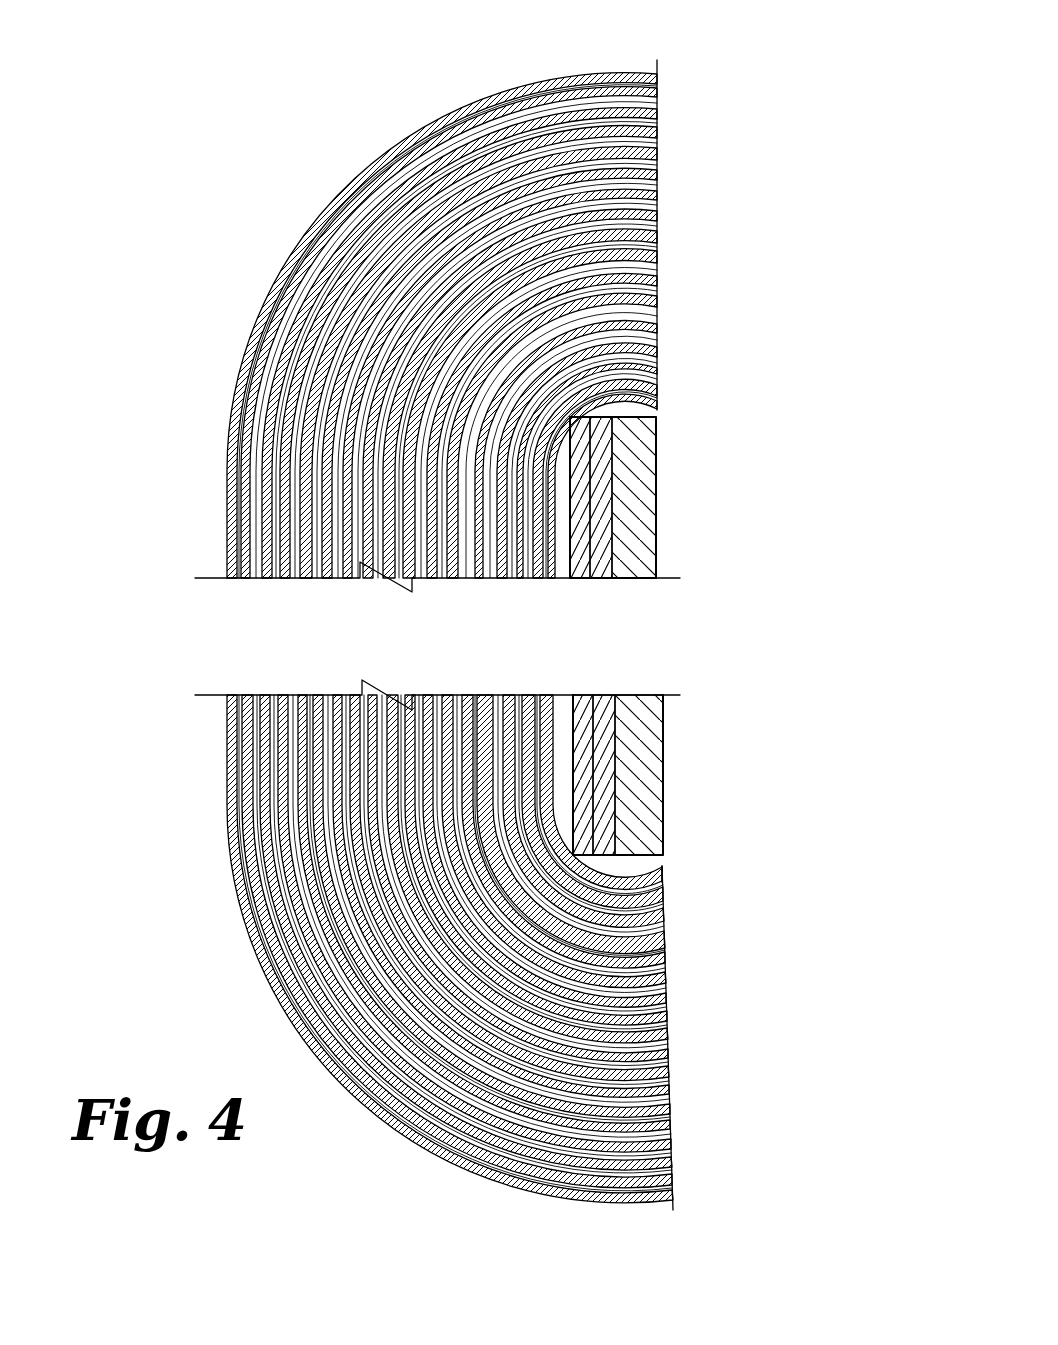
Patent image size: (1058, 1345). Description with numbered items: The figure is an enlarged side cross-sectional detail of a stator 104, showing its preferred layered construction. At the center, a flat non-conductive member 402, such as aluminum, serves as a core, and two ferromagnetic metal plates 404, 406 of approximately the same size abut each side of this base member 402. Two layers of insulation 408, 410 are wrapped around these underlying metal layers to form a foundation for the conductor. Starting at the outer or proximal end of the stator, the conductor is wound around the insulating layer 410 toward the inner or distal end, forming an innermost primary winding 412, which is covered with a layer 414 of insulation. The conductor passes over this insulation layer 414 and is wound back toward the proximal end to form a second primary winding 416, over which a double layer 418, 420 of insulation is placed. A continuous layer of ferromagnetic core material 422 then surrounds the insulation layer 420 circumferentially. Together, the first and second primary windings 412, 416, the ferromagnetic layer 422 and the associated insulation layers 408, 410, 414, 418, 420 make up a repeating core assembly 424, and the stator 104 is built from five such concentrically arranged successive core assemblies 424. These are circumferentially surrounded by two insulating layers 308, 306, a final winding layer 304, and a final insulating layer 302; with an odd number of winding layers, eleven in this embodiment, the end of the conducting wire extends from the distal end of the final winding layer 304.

The stator 104 is at (283, 188).
The final insulating layer 302 is at (660, 79).
The final winding layer 304 is at (660, 84).
The insulating layer 306 is at (660, 89).
The insulating layer 308 is at (660, 97).
The non-conductive member 402 is at (658, 790).
The ferromagnetic metal plate 404 is at (617, 695).
The ferromagnetic metal plate 406 is at (592, 695).
The layer of insulation 408 is at (662, 886).
The insulating layer 410 is at (545, 695).
The layer of windings 412 is at (660, 900).
The layer of insulation 414 is at (527, 695).
The second primary winding 416 is at (660, 918).
The layer of insulation 418 is at (513, 695).
The insulation layer 420 is at (660, 933).
The layer of ferromagnetic core material 422 is at (495, 695).
The repeating core assembly 424 is at (665, 100).